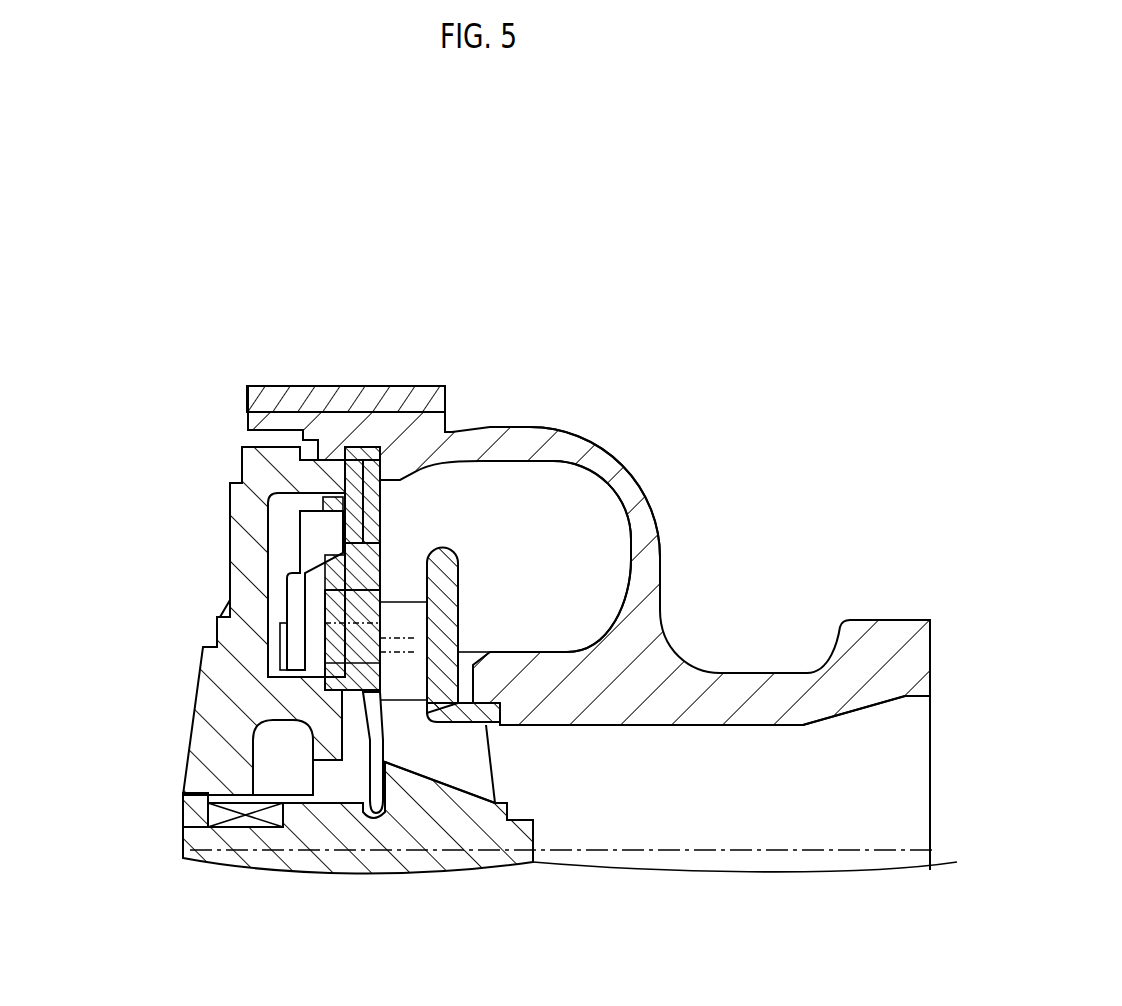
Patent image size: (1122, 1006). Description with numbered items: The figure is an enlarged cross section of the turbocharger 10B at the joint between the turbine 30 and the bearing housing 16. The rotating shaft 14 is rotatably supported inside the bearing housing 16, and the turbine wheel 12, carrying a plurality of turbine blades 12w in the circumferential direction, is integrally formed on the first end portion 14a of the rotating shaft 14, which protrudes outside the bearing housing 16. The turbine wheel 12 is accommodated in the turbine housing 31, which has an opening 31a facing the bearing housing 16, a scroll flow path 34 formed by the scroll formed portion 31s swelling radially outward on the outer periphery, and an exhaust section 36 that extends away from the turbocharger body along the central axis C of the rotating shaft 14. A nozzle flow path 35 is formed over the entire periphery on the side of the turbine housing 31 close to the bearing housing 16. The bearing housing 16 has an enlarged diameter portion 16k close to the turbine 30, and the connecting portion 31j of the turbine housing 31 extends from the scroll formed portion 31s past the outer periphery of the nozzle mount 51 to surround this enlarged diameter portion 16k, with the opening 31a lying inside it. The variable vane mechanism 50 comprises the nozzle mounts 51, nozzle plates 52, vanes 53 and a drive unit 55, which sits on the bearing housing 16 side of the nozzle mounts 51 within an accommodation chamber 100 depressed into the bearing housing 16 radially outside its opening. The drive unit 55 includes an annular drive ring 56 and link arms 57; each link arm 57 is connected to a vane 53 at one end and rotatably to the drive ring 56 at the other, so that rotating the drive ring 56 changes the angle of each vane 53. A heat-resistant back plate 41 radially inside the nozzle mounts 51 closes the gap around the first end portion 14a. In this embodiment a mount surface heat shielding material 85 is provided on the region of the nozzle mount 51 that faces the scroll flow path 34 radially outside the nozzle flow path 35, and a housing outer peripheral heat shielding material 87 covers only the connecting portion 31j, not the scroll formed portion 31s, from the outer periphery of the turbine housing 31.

The turbocharger 10B is at (784, 270).
The turbine wheel 12 is at (500, 803).
The turbine blades 12w is at (500, 783).
The rotating shaft 14 is at (208, 818).
The first end portion 14a is at (540, 830).
The bearing housing 16 is at (232, 553).
The enlarged diameter portion 16k is at (225, 550).
The turbine 30 is at (636, 448).
The turbine housing 31 is at (622, 462).
The opening 31a is at (247, 436).
The connecting portion 31j is at (270, 387).
The scroll formed portion 31s is at (598, 445).
The scroll flow path 34 is at (660, 538).
The nozzle flow path 35 is at (410, 578).
The exhaust section 36 is at (683, 728).
The back plate 41 is at (380, 742).
The variable vane mechanism 50 is at (262, 661).
The nozzle mounts 51 is at (408, 578).
The nozzle plates 52 is at (460, 590).
The vanes 53 is at (425, 620).
The drive unit 55 is at (287, 597).
The drive ring 56 is at (327, 570).
The link arms 57 is at (283, 622).
The mount surface heat shielding material 85 is at (388, 522).
The housing outer peripheral heat shielding material 87 is at (358, 387).
The accommodation chamber 100 is at (280, 524).
The central axis C is at (705, 855).